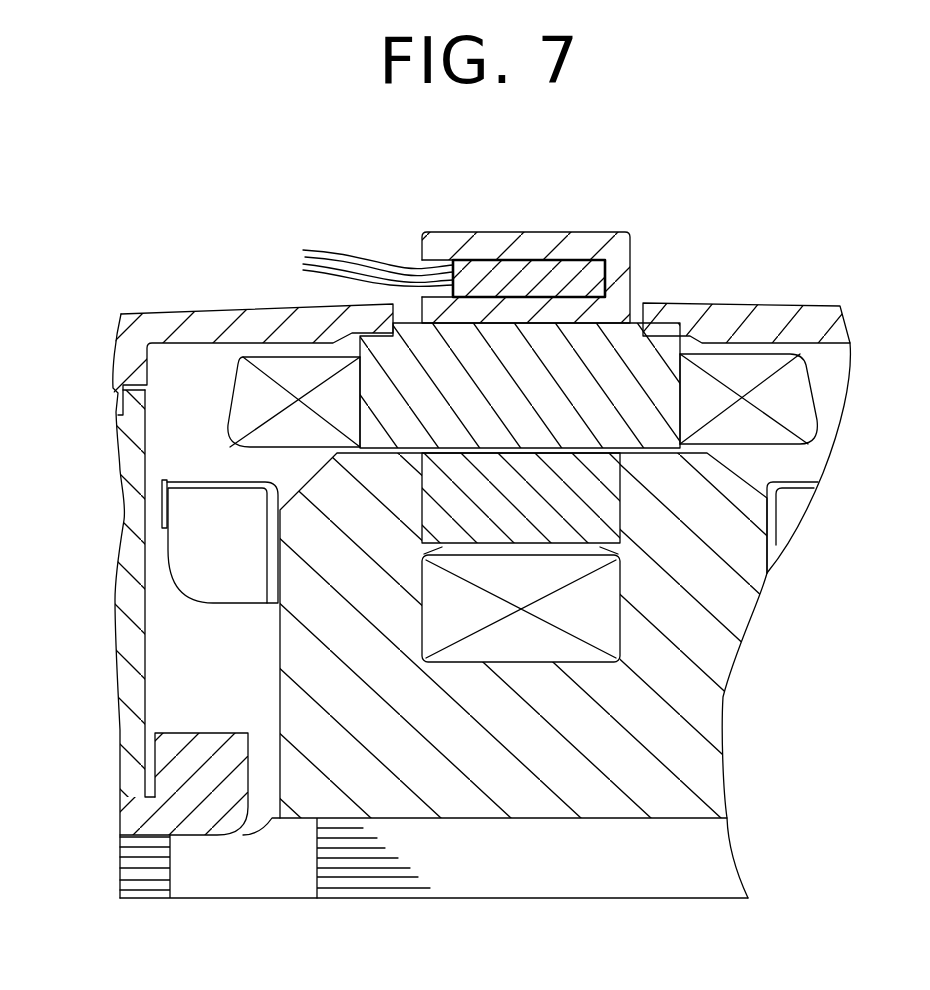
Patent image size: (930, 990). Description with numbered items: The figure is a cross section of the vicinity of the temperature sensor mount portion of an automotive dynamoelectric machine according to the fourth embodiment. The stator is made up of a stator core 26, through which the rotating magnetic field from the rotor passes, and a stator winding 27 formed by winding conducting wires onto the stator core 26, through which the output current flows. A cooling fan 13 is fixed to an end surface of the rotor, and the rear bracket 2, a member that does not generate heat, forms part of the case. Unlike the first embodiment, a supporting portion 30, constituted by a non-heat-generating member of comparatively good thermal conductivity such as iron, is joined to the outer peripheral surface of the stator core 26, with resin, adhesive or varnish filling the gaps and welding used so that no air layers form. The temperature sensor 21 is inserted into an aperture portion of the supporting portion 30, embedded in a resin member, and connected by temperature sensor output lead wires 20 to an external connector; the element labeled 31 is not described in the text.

The rear bracket 2 is at (162, 327).
The cooling fan 13 is at (197, 522).
The temperature sensor output lead wires 20 is at (327, 250).
The temperature sensor 21 is at (528, 275).
The stator core 26 is at (593, 373).
The stator winding 27 is at (265, 390).
The supporting portion 30 is at (563, 232).
The lead wire outlet 31 is at (407, 258).